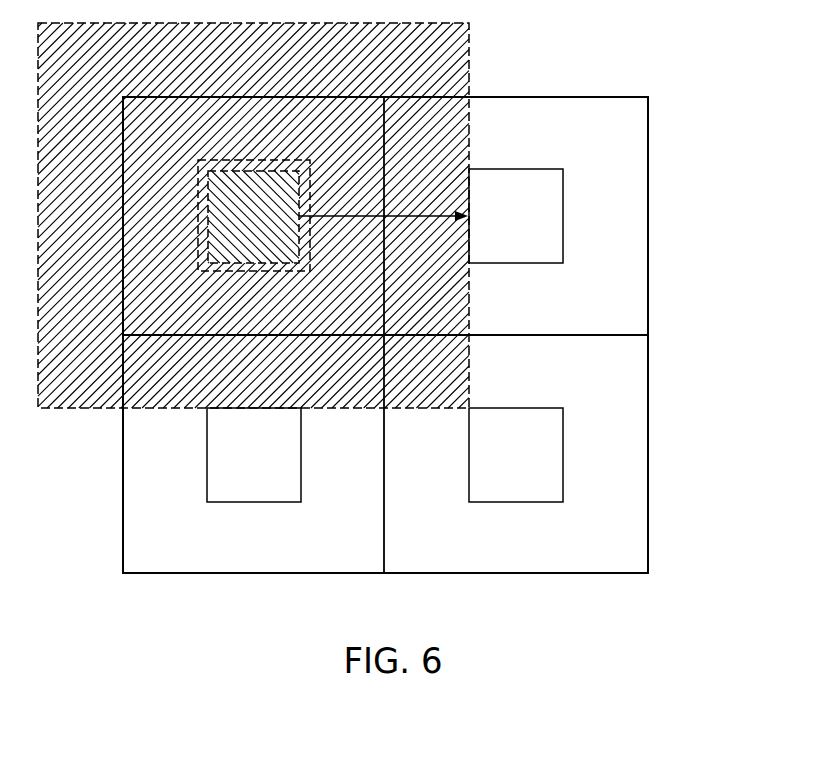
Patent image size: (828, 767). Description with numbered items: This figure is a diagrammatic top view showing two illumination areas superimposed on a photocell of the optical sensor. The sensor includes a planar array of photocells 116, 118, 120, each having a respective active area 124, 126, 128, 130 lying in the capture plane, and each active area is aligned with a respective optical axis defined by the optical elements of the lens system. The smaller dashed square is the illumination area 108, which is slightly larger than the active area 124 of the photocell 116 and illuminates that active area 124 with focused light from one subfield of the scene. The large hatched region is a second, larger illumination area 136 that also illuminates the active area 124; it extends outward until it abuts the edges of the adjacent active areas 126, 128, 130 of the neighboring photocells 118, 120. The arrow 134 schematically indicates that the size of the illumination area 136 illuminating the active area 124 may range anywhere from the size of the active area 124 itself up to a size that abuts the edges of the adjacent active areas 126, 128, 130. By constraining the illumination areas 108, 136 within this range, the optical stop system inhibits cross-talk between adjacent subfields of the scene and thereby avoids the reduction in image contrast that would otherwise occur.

The illumination area 108 is at (256, 160).
The photocell 116 is at (124, 216).
The photocell 118 is at (648, 214).
The photocell 120 is at (648, 455).
The active area 124 is at (237, 227).
The active area 126 is at (495, 226).
The active area 128 is at (498, 465).
The active area 130 is at (237, 465).
The arrow 134 is at (371, 217).
The illumination area 136 is at (235, 66).